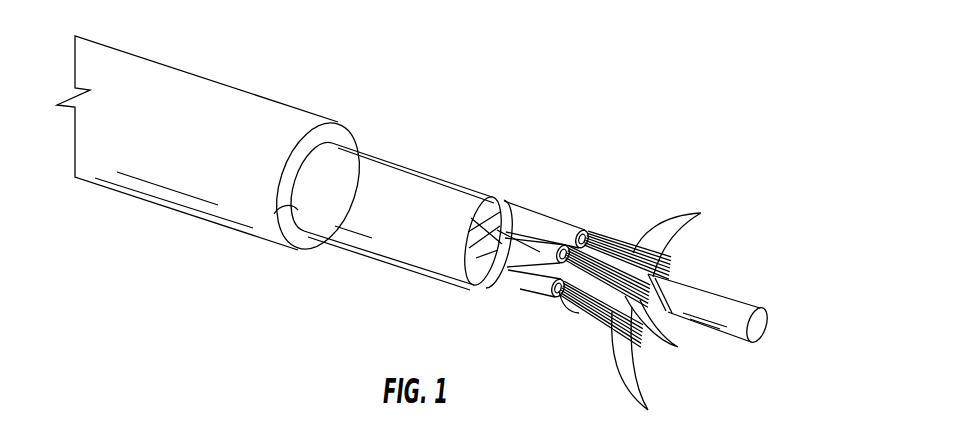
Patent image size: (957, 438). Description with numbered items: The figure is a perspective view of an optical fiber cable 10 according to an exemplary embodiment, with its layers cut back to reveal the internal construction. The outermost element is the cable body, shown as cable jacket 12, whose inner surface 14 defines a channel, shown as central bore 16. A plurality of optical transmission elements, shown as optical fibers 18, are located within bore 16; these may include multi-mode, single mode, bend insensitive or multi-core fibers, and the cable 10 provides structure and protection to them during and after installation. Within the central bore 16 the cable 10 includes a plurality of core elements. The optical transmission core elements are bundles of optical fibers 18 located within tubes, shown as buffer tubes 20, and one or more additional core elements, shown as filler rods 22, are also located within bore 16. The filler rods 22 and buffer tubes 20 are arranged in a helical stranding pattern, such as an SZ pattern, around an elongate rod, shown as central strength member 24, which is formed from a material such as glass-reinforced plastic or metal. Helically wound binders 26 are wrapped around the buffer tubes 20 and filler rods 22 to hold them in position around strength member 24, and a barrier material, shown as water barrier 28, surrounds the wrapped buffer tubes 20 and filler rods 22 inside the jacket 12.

The cable 10 is at (450, 76).
The cable jacket 12 is at (238, 100).
The inner surface 14 is at (279, 219).
The central bore 16 is at (296, 234).
The optical fibers 18 is at (701, 213).
The buffer tubes 20 is at (517, 228).
The filler rods 22 is at (568, 312).
The central strength member 24 is at (767, 320).
The binders 26 is at (487, 280).
The water barrier 28 is at (447, 172).